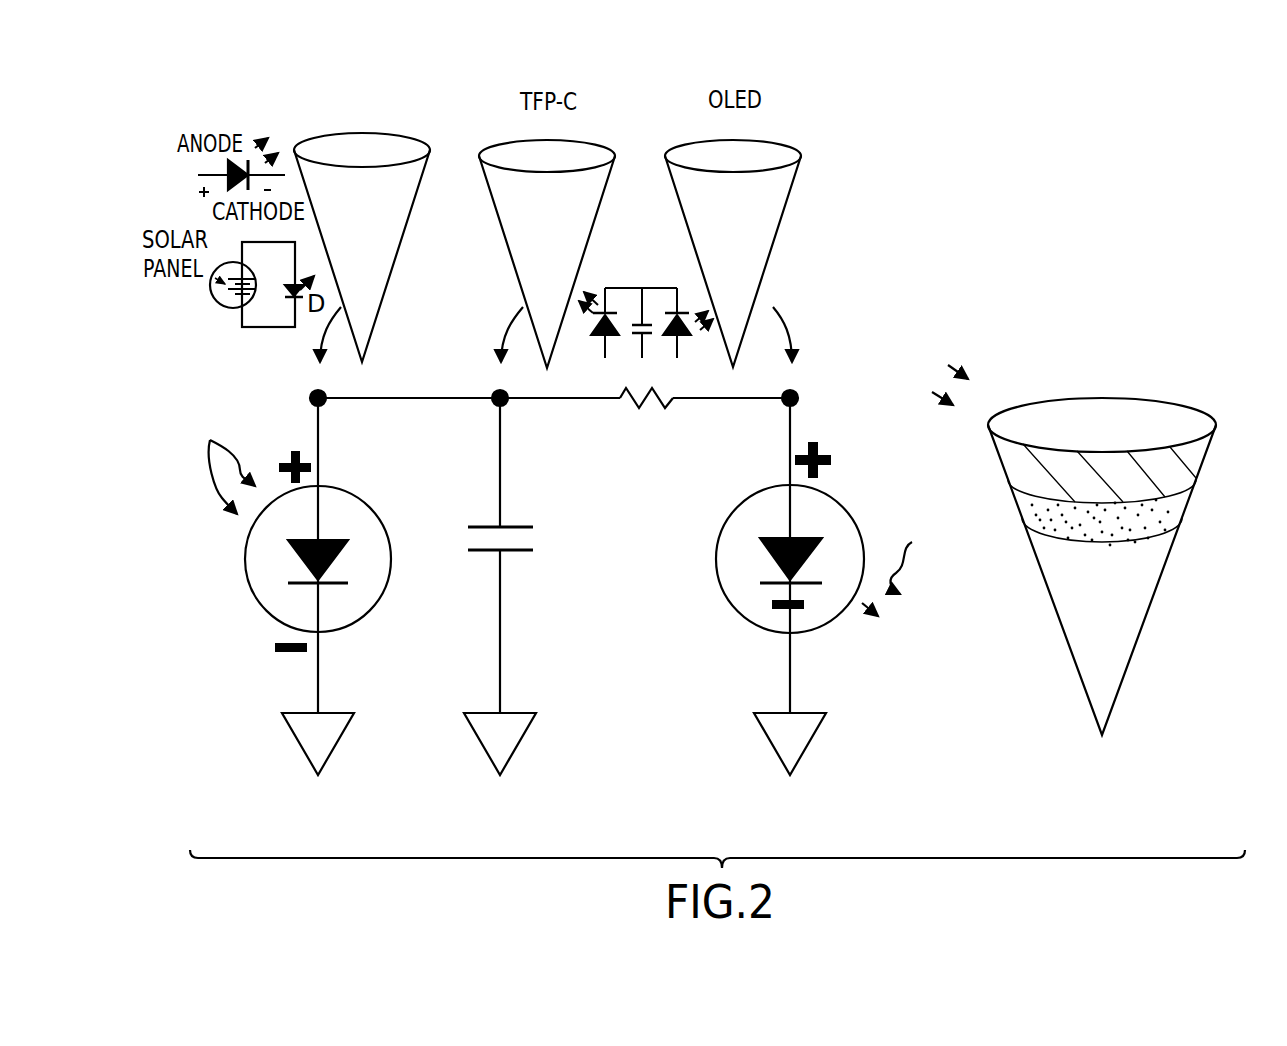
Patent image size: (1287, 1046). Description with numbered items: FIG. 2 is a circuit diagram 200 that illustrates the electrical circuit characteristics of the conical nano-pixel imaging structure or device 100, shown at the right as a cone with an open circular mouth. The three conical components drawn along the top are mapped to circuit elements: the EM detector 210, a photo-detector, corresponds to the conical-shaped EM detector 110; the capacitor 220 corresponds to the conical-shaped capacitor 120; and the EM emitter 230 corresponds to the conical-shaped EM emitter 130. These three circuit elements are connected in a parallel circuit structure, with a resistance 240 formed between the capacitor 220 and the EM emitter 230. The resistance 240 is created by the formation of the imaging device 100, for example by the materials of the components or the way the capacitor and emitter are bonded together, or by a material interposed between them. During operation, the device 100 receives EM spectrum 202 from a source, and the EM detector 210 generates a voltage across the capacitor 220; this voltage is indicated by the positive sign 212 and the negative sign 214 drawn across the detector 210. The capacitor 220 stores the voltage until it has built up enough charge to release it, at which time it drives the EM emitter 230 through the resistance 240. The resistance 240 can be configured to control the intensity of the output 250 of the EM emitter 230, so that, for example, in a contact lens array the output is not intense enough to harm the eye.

The conical nano-pixel imaging structure or device 100 is at (1155, 575).
The conical-shaped EM detector 110 is at (382, 280).
The conical-shaped capacitor 120 is at (593, 188).
The conical-shaped EM emitter 130 is at (772, 215).
The circuit diagram 200 is at (821, 401).
The EM spectrum 202 is at (222, 462).
The EM detector 210 is at (347, 502).
The positive sign 212 is at (282, 453).
The negative sign 214 is at (288, 655).
The capacitor 220 is at (520, 552).
The EM emitter 230 is at (840, 528).
The resistance 240 is at (673, 402).
The output 250 is at (904, 578).